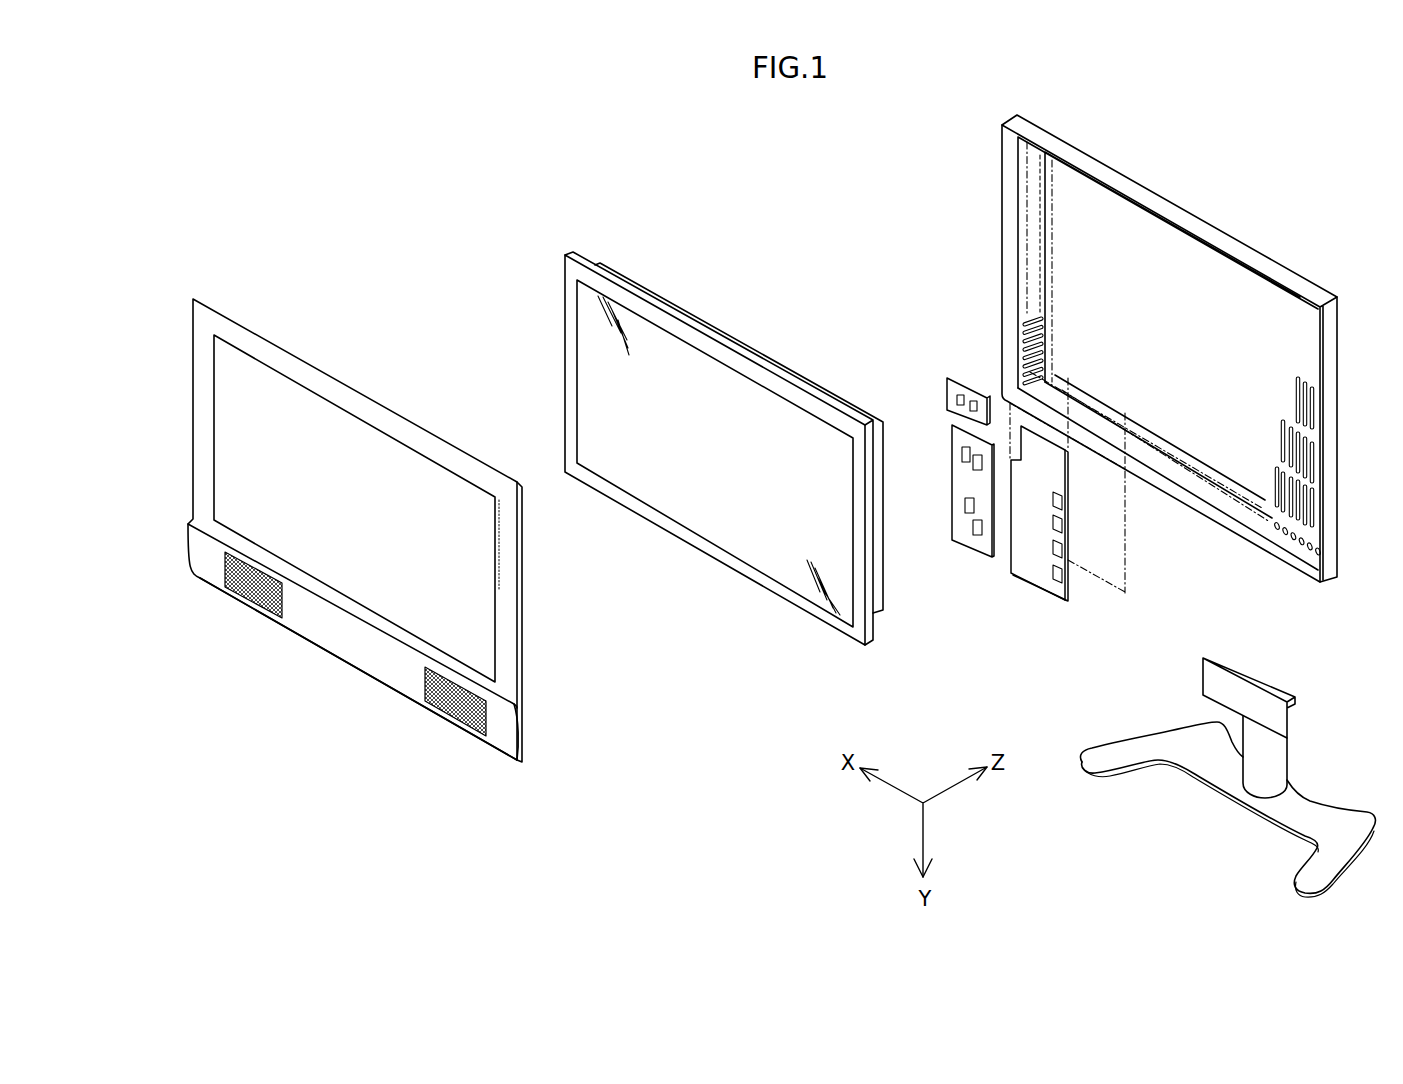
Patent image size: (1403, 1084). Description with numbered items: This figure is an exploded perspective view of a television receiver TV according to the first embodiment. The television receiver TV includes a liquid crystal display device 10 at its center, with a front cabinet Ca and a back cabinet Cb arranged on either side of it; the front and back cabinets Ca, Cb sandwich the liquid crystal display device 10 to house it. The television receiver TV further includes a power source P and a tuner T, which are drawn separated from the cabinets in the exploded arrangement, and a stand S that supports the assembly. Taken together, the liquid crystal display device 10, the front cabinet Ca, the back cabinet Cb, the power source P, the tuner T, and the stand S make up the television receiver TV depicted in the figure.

The television receiver TV is at (748, 187).
The front cabinet Ca is at (341, 380).
The liquid crystal display device 10 is at (668, 302).
The tuner T is at (965, 548).
The power source P is at (1030, 585).
The back cabinet Cb is at (1159, 192).
The stand S is at (1140, 767).